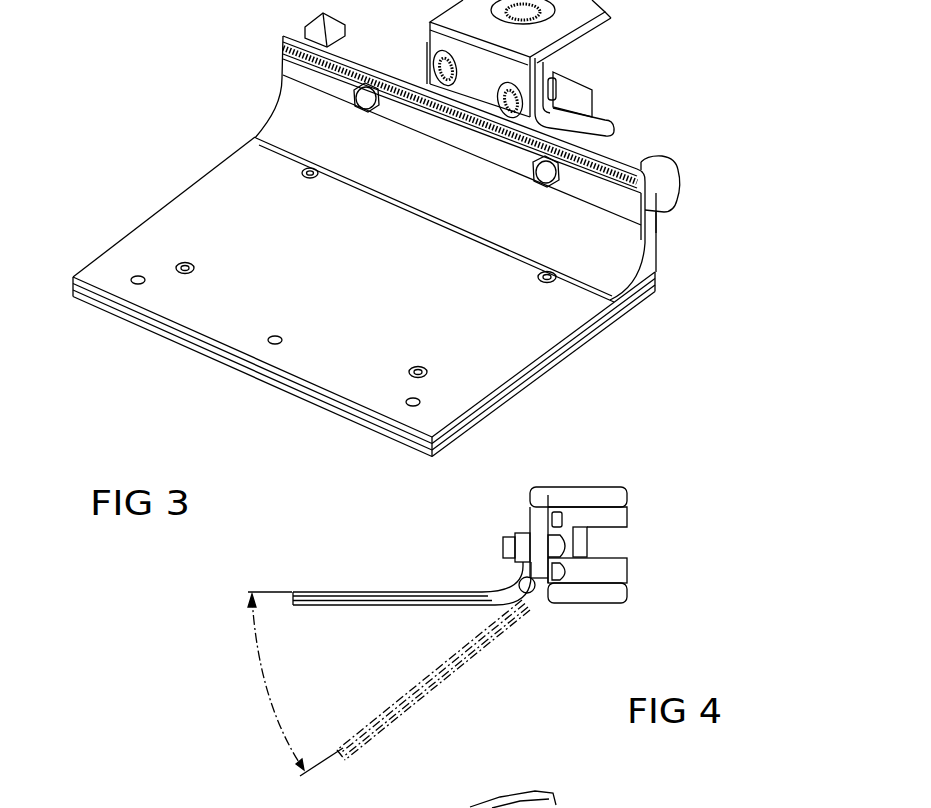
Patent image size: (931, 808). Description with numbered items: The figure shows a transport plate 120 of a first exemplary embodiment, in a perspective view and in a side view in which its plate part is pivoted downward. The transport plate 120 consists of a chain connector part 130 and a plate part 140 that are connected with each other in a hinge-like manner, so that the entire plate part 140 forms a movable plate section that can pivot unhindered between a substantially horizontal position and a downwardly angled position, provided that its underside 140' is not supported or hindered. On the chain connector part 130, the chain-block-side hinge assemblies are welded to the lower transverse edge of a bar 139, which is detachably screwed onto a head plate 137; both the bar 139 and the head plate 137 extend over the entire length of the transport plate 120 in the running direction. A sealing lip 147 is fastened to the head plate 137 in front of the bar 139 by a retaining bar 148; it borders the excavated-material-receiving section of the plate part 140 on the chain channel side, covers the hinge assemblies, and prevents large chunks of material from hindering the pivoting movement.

In FIG. 3, the transport plate 120 is at (198, 139).
In FIG. 3, the chain connector part 130 is at (633, 59).
In FIG. 4, the chain connector part 130 is at (653, 519).
In FIG. 3, the head plate 137 is at (617, 153).
In FIG. 3, the bar 139 is at (662, 220).
In FIG. 3, the plate part 140 is at (346, 246).
In FIG. 4, the plate part 140 is at (391, 629).
In FIG. 4, the underside of the plate part 140' is at (415, 680).
In FIG. 3, the sealing lip 147 is at (512, 215).
In FIG. 3, the retaining bar 148 is at (458, 128).